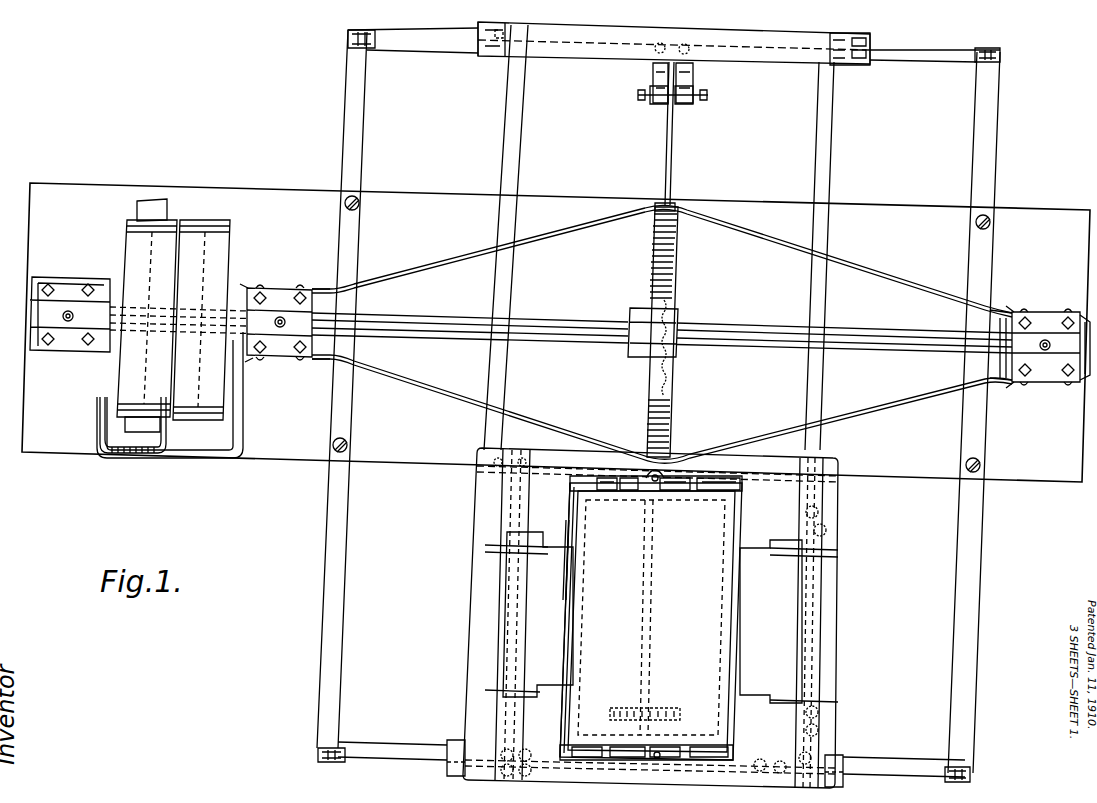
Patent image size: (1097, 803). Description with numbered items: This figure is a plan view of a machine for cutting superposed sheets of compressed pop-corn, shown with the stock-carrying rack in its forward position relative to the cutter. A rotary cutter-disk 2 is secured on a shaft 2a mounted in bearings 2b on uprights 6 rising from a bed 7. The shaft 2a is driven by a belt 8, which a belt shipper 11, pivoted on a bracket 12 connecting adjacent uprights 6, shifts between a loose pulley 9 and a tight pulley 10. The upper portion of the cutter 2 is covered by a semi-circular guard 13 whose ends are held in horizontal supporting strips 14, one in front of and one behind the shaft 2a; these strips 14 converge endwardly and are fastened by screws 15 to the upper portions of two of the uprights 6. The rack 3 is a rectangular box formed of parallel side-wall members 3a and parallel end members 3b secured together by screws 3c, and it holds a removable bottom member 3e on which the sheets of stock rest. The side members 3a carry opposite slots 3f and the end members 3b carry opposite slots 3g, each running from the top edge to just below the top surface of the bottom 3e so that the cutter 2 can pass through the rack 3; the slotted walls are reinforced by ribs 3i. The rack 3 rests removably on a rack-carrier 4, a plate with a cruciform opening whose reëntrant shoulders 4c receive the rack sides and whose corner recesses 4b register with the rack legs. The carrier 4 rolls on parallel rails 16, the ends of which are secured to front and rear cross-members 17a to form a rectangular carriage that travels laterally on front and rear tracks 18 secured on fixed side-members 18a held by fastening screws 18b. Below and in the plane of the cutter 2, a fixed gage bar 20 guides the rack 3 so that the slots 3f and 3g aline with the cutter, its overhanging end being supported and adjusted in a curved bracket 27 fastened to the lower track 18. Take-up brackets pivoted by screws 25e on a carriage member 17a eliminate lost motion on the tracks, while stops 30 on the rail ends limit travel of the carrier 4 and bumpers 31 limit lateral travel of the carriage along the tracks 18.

The rotary cutter-disk 2 is at (668, 396).
The shaft 2a is at (888, 338).
The bearings 2b is at (1042, 400).
The rack 3 is at (572, 514).
The side-wall members 3a is at (566, 660).
The end members 3b is at (628, 478).
The screws 3c is at (590, 486).
The bottom member 3e is at (610, 586).
The slots 3f is at (580, 622).
The slots 3g is at (656, 745).
The ribs 3i is at (566, 640).
The rack-carrier 4 is at (838, 512).
The corner recesses 4b is at (776, 554).
The reëntrant shoulders 4c is at (742, 548).
The uprights 6 is at (345, 354).
The bed 7 is at (1030, 470).
The belt 8 is at (152, 200).
The loose pulley 9 is at (136, 241).
The tight pulley 10 is at (218, 256).
The belt shipper 11 is at (137, 460).
The bracket 12 is at (222, 460).
The semi-circular guard 13 is at (676, 272).
The supporting strips 14 is at (420, 386).
The screws 15 is at (300, 360).
The rails 16 is at (515, 136).
The cross-members 17a is at (843, 760).
The tracks 18 is at (425, 42).
The side-members 18a is at (1018, 154).
The fastening screws 18b is at (358, 198).
The gage bar 20 is at (665, 176).
The pivot screw 25e is at (822, 514).
The bracket 27 is at (664, 710).
The stops 30 is at (848, 62).
The bumpers 31 is at (975, 62).